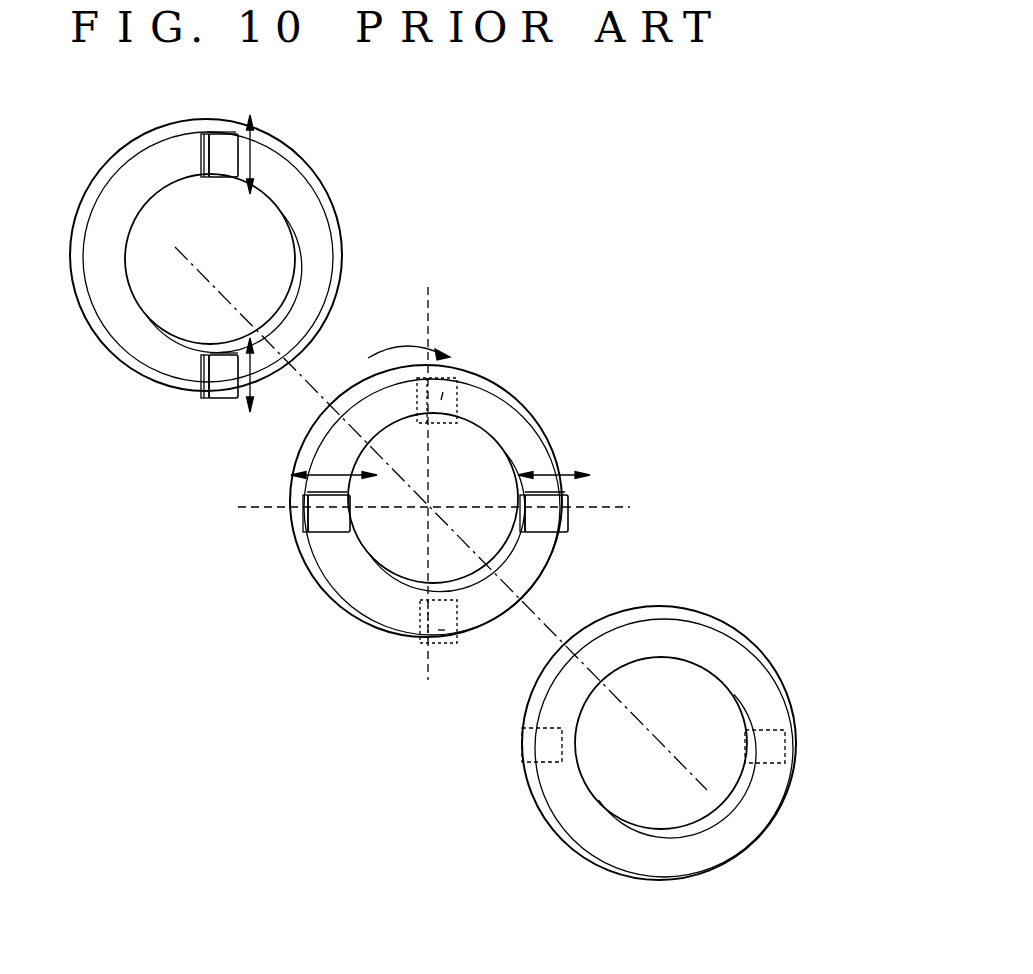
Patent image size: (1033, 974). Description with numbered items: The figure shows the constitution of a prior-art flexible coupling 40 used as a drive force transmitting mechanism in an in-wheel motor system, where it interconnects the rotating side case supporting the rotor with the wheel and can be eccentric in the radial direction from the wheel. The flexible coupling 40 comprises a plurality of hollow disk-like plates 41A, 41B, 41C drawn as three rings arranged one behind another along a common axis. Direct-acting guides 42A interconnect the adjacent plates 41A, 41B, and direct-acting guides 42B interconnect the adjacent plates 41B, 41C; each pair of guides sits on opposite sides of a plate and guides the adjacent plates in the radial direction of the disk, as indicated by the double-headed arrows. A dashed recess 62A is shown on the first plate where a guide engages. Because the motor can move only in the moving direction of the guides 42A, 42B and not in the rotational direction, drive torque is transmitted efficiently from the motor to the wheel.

The flexible coupling 40 is at (574, 392).
The hollow disk-like plate 41A is at (683, 632).
The hollow disk-like plate 41B is at (367, 592).
The hollow disk-like plate 41C is at (290, 177).
The direct-acting guide 42A is at (322, 500).
The direct-acting guide 42B is at (215, 152).
The groove 62A is at (553, 748).